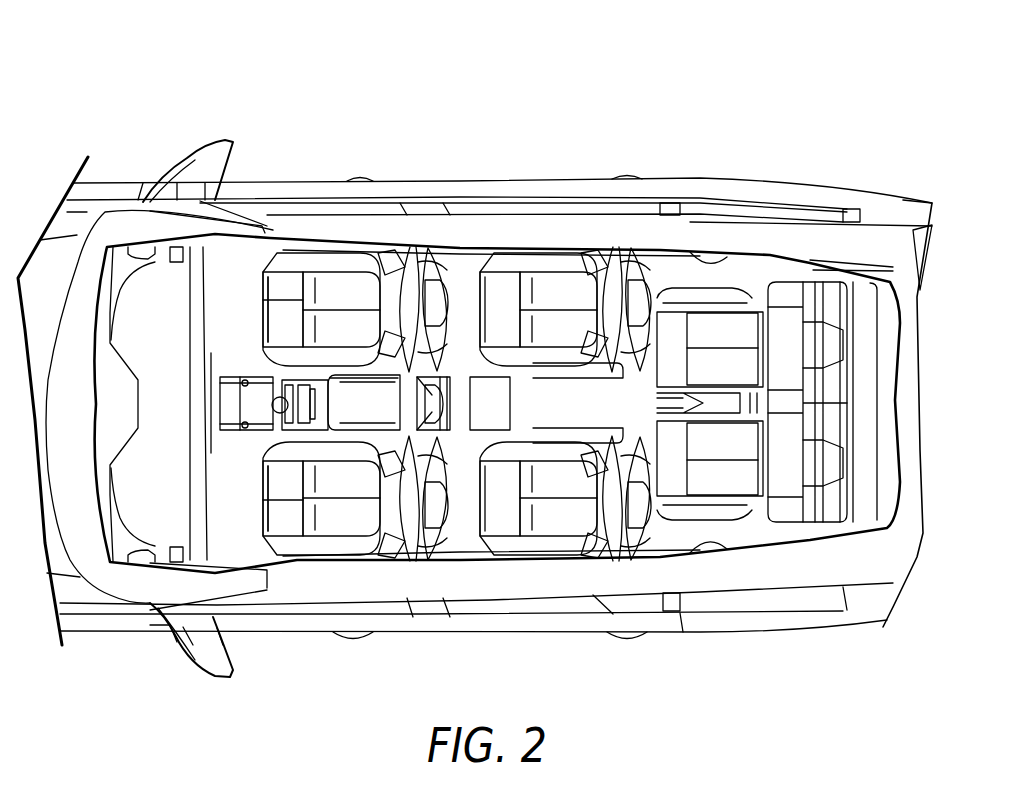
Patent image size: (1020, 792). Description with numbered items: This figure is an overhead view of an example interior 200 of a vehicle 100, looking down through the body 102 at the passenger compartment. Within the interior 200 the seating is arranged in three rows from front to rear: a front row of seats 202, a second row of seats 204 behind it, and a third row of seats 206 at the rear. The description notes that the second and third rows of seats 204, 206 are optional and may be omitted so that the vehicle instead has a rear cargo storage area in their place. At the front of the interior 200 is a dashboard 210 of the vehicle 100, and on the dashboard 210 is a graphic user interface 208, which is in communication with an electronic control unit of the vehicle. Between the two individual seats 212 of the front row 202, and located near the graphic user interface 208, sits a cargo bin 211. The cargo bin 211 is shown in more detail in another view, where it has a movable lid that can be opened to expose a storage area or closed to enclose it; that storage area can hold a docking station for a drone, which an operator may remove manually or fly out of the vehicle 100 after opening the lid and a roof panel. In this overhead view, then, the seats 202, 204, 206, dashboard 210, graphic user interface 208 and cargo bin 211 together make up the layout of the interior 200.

The vehicle 100 is at (100, 125).
The vehicle body 102 is at (877, 217).
The interior 200 is at (470, 272).
The front row of seats 202 is at (334, 290).
The second row of seats 204 is at (555, 297).
The third row of seats 206 is at (730, 333).
The graphic user interface (GUI) 208 is at (232, 408).
The dashboard 210 is at (198, 405).
The cargo bin 211 is at (373, 397).
The seats 212 is at (287, 297).